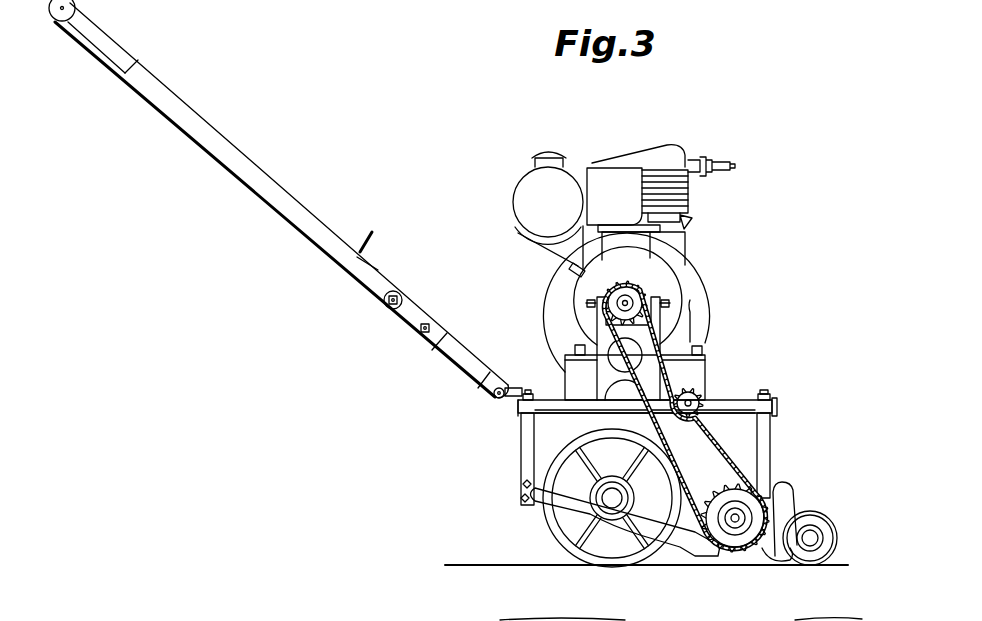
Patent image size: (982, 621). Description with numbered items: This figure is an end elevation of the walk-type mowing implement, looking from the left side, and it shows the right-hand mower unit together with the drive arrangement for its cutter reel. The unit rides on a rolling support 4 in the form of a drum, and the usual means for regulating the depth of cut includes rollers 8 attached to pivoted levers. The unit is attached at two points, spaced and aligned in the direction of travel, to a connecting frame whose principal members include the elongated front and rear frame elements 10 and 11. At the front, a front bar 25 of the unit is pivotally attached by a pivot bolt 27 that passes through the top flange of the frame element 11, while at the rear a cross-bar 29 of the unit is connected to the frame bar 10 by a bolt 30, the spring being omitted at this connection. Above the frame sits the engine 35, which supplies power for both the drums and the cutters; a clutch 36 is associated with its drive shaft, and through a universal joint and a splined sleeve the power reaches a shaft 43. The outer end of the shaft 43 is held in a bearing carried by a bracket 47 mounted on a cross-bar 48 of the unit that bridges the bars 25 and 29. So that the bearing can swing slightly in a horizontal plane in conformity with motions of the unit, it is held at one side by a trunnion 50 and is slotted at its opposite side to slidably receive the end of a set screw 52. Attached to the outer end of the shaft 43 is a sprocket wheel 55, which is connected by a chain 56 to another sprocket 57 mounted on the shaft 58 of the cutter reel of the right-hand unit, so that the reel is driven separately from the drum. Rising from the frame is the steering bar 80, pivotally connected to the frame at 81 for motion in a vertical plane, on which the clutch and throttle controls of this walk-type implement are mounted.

The rolling support 4 is at (553, 532).
The rollers 8 is at (824, 560).
The front frame element 10 is at (517, 407).
The rear frame element 11 is at (778, 406).
The front bar 25 is at (768, 449).
The pivot bolt 27 is at (766, 393).
The cross-bar 29 is at (524, 448).
The bolt 30 is at (528, 391).
The engine 35 is at (707, 298).
The clutch 36 is at (680, 277).
The shaft 43 is at (624, 300).
The bracket 47 is at (597, 320).
The cross-bar 48 is at (553, 414).
The trunnion 50 is at (590, 303).
The set screw 52 is at (666, 302).
The sprocket wheel 55 is at (640, 290).
The chain 56 is at (683, 372).
The sprocket 57 is at (724, 498).
The shaft 58 is at (736, 529).
The steering bar 80 is at (263, 183).
The pivot connection 81 is at (490, 393).